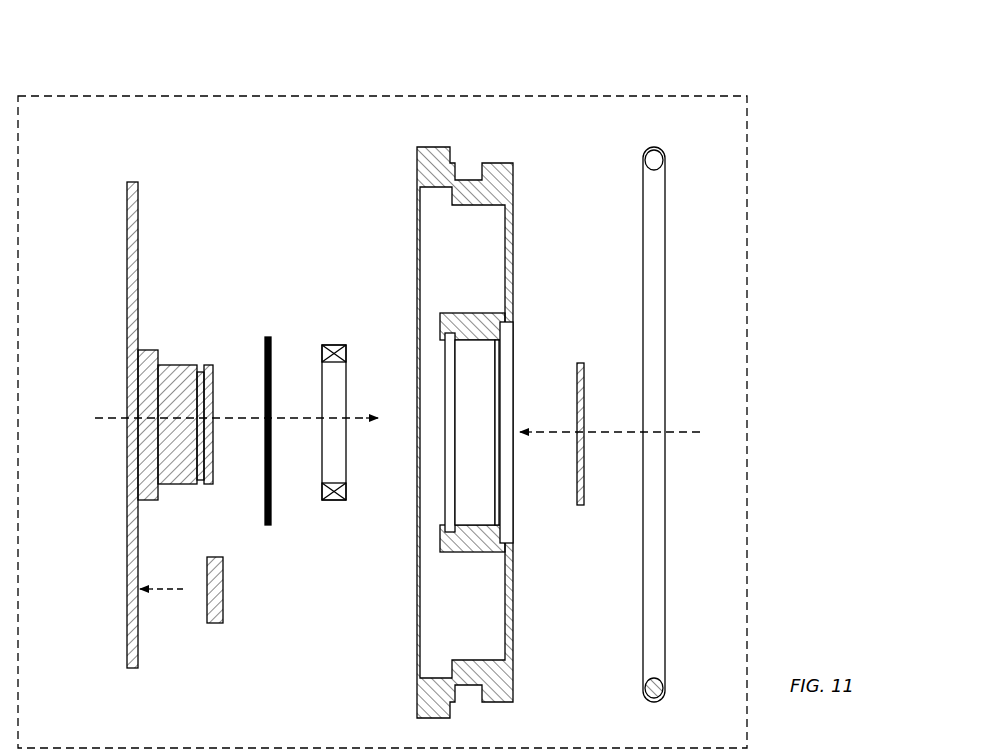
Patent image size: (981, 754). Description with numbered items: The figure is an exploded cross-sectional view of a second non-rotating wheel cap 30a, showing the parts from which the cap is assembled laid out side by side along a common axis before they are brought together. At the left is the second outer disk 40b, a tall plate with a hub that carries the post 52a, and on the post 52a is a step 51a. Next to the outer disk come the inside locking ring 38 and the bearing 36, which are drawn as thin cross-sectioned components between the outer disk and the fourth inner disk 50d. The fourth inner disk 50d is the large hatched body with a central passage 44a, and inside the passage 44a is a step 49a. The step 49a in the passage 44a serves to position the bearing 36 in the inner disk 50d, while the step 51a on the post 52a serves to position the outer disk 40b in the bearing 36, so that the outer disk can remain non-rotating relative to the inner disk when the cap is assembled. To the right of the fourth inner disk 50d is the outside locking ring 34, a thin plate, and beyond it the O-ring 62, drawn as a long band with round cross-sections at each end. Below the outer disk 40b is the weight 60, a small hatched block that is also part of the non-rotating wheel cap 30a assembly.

The second non-rotating wheel cap 30a is at (250, 80).
The second outer disk 40b is at (127, 232).
The step 51a is at (160, 362).
The post 52a is at (199, 368).
The inside locking ring 38 is at (268, 337).
The bearing 36 is at (335, 345).
The fourth inner disk 50d is at (390, 200).
The passage 44a is at (472, 376).
The step 49a is at (495, 520).
The outside locking ring 34 is at (584, 395).
The O-ring 62 is at (652, 312).
The weight 60 is at (223, 590).